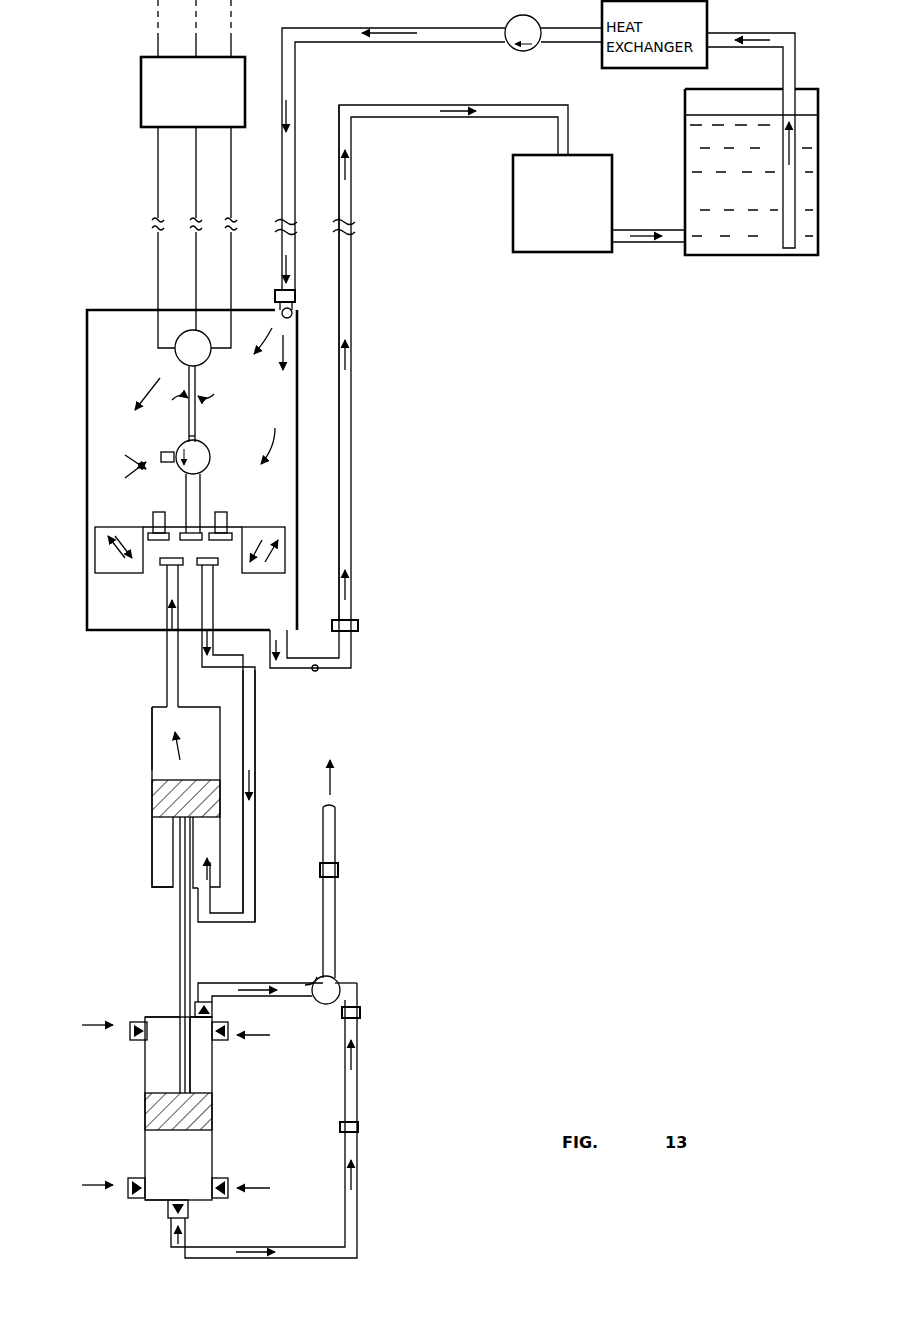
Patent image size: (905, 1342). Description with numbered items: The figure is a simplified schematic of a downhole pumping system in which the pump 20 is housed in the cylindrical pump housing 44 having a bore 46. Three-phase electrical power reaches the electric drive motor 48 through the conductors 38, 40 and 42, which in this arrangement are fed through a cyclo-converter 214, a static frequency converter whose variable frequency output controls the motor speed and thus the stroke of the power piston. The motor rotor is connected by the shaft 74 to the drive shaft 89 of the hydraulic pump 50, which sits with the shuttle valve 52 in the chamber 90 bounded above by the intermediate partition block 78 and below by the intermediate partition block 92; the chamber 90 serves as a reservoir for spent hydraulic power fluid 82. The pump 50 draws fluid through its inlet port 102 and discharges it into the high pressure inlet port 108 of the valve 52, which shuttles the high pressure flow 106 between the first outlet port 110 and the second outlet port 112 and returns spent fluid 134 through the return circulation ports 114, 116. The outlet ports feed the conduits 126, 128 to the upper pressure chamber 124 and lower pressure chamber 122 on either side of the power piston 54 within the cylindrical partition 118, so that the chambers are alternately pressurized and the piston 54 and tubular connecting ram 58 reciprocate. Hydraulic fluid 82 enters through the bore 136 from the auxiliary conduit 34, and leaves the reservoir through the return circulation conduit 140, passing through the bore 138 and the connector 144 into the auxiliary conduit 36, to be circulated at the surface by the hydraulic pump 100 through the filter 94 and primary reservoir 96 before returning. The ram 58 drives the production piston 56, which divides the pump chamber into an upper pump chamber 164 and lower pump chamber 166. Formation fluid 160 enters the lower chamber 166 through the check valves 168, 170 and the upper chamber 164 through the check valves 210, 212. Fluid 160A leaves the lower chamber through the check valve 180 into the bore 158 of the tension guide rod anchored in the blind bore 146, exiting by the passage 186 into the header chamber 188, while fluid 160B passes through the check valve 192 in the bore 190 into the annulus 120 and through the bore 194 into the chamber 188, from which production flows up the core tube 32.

The pump 20 is at (410, 538).
The core tube 32 is at (334, 844).
The auxiliary hydraulic conduit 34 is at (294, 76).
The auxiliary hydraulic conduit 36 is at (356, 256).
The electrical conductor 38 is at (158, 274).
The electrical conductor 40 is at (196, 274).
The electrical conductor 42 is at (234, 274).
The pump housing 44 is at (86, 418).
The bore 46 is at (88, 464).
The electrical drive motor 48 is at (174, 362).
The hydraulic pump 50 is at (208, 460).
The hydraulic shuttle valve 52 is at (116, 576).
The power piston 54 is at (150, 800).
The production piston 56 is at (146, 1110).
The tubular connecting ram 58 is at (178, 954).
The shaft 74 is at (198, 376).
The intermediate partition block 78 is at (108, 305).
The hydraulic power fluid 82 is at (392, 32).
The drive shaft 89 is at (197, 432).
The chamber 90 is at (208, 411).
The intermediate partition block 92 is at (152, 706).
The filter 94 is at (513, 206).
The primary reservoir 96 is at (727, 256).
The surface mounted hydraulic pump 100 is at (535, 20).
The inlet port 102 is at (172, 452).
The high pressure hydraulic flow 106 is at (214, 608).
The high pressure inlet port 108 is at (188, 544).
The first outlet port 110 is at (216, 570).
The second outlet port 112 is at (160, 570).
The return circulation port 114 is at (152, 522).
The return circulation port 116 is at (228, 520).
The cylindrical partition 118 is at (150, 748).
The annulus 120 is at (250, 994).
The lower pressure chamber 122 is at (167, 852).
The upper pressure chamber 124 is at (186, 743).
The conduit 126 is at (258, 720).
The conduit 128 is at (178, 680).
The spent power fluid 134 is at (154, 504).
The bore 136 is at (292, 310).
The bore 138 is at (310, 672).
The return circulation conduit 140 is at (314, 670).
The tension guide rod 144 is at (358, 1088).
The blind bore 146 is at (362, 1010).
The bore 158 is at (300, 1260).
The formation fluid 160 is at (105, 1026).
The formation fluid 160A is at (358, 1046).
The formation fluid 160B is at (260, 982).
The upper pump chamber 164 is at (178, 1055).
The lower pump chamber 166 is at (178, 1165).
The check valve 168 is at (134, 1200).
The check valve 170 is at (224, 1196).
The check valve 180 is at (190, 1210).
The passage 186 is at (348, 984).
The chamber 188 is at (342, 978).
The bore 190 is at (216, 982).
The check valve 192 is at (214, 1008).
The bore 194 is at (312, 982).
The check valve 210 is at (136, 1044).
The check valve 212 is at (222, 1042).
The cyclo-converter 214 is at (140, 95).